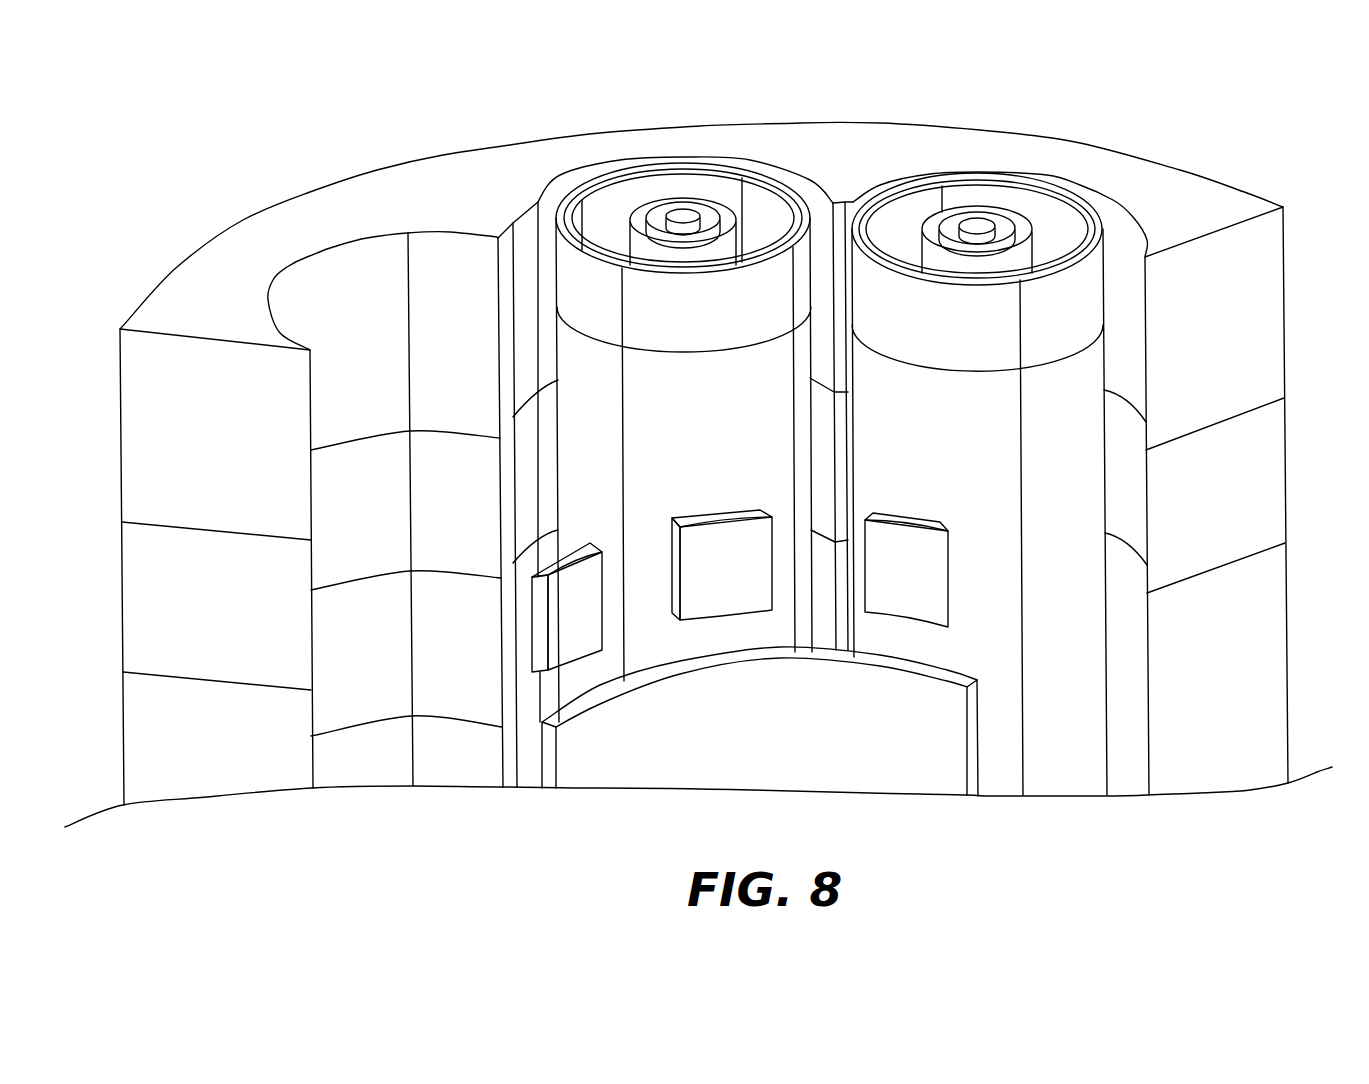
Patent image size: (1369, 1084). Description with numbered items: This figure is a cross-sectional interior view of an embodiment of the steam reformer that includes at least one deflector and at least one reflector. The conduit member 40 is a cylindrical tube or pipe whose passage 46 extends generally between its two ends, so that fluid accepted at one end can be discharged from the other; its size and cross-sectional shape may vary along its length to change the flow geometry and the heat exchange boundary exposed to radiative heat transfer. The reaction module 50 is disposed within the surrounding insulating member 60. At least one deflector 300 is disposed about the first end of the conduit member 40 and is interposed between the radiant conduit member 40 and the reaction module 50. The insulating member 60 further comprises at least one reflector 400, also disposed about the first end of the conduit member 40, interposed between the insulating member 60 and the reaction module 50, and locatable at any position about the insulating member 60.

The reflector 400 is at (450, 458).
The insulating member 60 is at (1250, 335).
The reaction module 50 is at (698, 168).
The deflector 300 is at (890, 537).
The passage 46 is at (730, 753).
The conduit member 40 is at (973, 778).